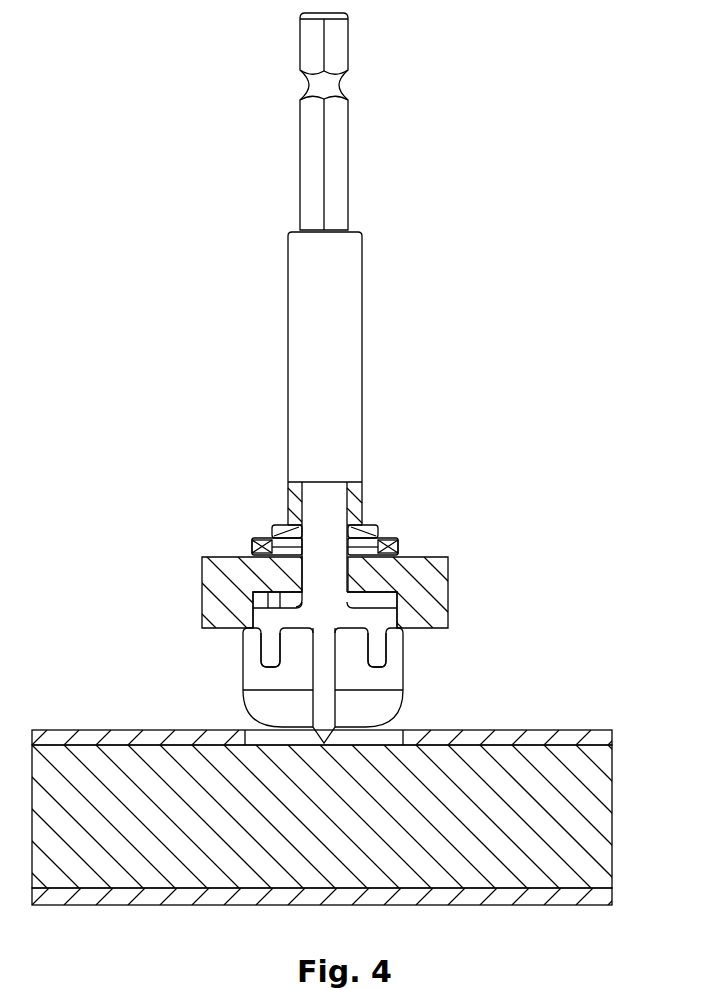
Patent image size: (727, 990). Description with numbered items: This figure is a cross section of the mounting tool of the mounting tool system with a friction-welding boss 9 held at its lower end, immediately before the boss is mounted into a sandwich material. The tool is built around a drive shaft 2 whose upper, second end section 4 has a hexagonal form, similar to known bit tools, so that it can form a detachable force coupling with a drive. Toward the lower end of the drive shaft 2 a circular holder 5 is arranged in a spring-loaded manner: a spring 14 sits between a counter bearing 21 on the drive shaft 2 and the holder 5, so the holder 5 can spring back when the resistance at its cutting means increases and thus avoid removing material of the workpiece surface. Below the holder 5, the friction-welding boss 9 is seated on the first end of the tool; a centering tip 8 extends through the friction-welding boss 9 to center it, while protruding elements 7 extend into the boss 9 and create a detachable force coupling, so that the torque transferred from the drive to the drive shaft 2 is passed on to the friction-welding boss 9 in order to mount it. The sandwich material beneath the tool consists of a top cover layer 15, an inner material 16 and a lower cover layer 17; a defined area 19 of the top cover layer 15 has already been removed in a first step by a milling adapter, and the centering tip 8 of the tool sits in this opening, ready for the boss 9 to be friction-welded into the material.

The drive shaft 2 is at (303, 317).
The second end section 4 is at (381, 16).
The circular holder 5 is at (213, 583).
The protruding elements 7 is at (271, 660).
The centering tip 8 is at (320, 695).
The friction-welding boss 9 is at (396, 674).
The spring 14 is at (252, 541).
The top cover layer 15 is at (612, 735).
The inner material 16 is at (612, 812).
The lower cover layer 17 is at (612, 888).
The defined area 19 is at (372, 733).
The counter bearing 21 is at (362, 524).